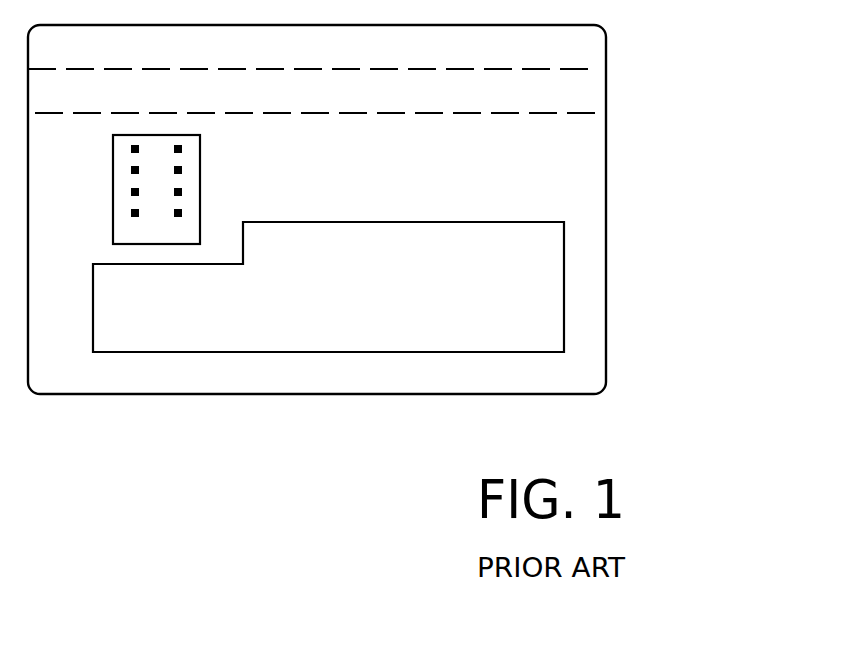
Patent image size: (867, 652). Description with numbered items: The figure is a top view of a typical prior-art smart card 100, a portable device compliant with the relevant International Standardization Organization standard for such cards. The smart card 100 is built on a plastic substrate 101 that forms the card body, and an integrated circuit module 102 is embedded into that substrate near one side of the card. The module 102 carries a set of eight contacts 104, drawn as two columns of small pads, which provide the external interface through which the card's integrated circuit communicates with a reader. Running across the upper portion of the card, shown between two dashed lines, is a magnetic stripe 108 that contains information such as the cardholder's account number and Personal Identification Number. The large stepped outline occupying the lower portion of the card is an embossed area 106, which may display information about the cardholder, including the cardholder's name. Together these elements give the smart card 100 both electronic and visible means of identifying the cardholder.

The smart card 100 is at (680, 177).
The plastic substrate 101 is at (603, 386).
The integrated circuit module 102 is at (200, 145).
The contacts 104 is at (200, 176).
The embossed area 106 is at (551, 342).
The magnetic stripe 108 is at (593, 104).